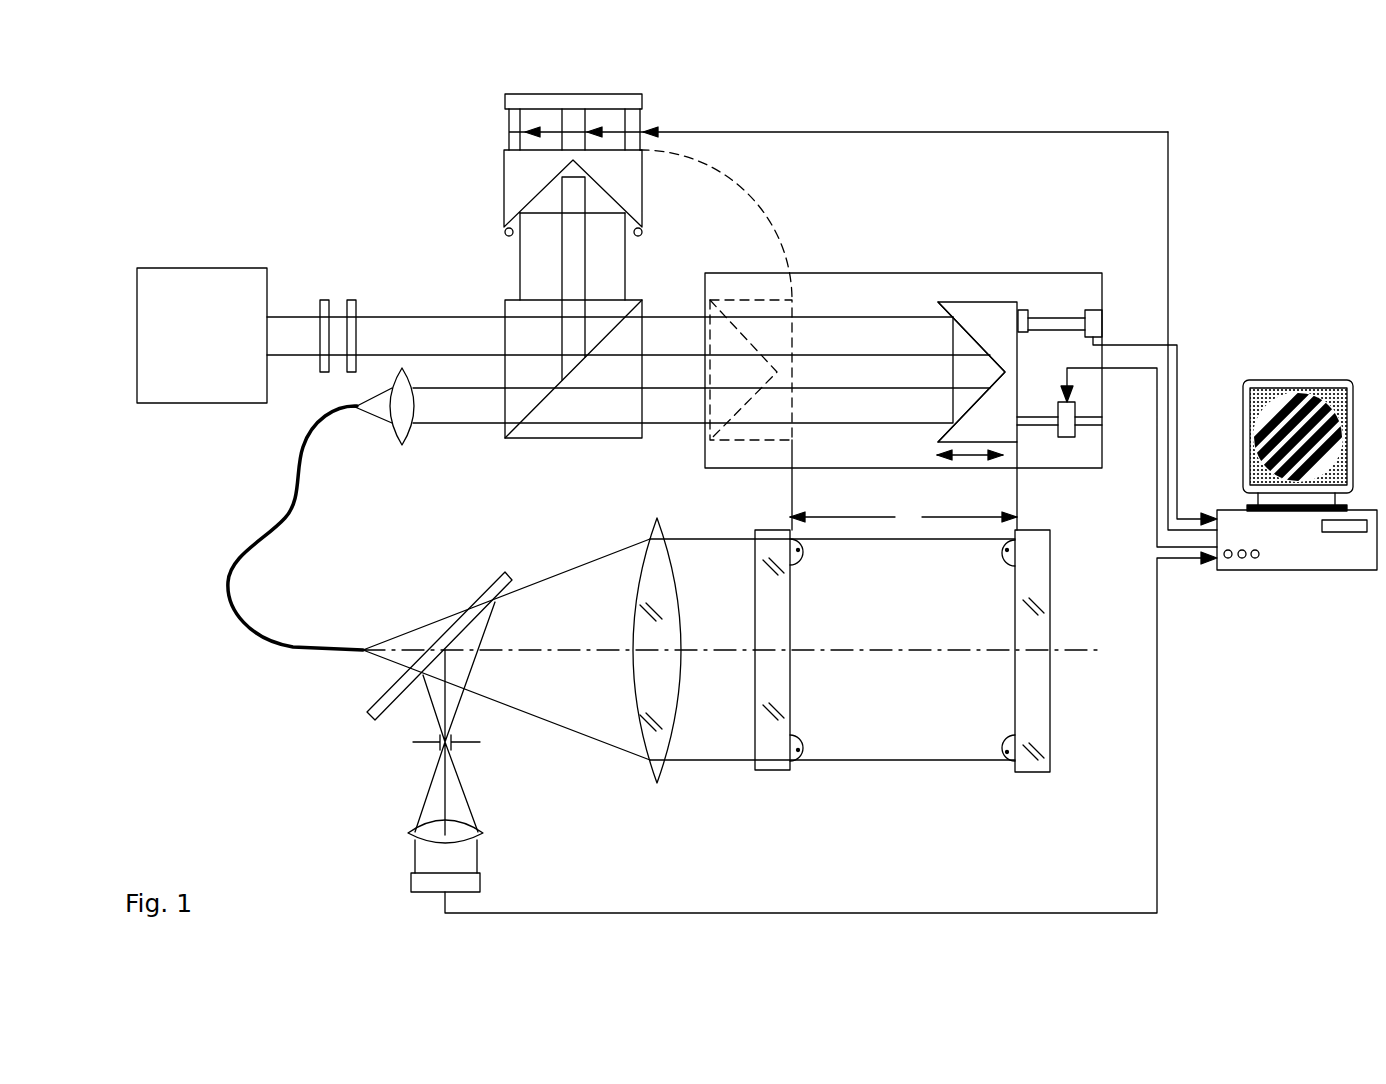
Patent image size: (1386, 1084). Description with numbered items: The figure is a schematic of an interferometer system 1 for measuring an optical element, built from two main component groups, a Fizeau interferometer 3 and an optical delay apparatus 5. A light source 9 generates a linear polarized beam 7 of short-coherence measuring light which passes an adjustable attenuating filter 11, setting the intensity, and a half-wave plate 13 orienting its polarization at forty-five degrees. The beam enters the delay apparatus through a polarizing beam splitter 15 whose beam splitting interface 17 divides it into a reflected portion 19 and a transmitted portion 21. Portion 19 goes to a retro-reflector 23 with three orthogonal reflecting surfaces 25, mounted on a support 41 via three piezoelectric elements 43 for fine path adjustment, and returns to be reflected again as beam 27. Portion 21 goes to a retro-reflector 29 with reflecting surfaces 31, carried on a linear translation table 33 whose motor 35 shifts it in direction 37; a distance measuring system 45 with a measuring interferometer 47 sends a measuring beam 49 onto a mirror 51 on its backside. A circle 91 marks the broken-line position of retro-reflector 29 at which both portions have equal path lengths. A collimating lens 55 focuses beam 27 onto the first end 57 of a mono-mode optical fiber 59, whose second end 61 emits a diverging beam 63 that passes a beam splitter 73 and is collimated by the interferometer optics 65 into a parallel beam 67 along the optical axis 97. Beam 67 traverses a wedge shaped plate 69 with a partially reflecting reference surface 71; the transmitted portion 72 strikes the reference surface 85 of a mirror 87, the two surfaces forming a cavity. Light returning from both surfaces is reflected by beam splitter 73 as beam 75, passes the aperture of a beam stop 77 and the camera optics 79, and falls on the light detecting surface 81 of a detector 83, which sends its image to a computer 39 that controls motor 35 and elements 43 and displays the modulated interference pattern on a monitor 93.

The interferometer system 1 is at (1252, 185).
The Fizeau interferometer 3 is at (260, 775).
The optical delay apparatus 5 is at (285, 142).
The linear polarized beam 7 is at (287, 317).
The light source 9 is at (200, 268).
The adjustable attenuating filter 11 is at (322, 300).
The half-wave plate 13 is at (351, 300).
The polarizing beam splitter 15 is at (581, 438).
The beam splitting interface 17 is at (510, 438).
The reflected beam portion 19 is at (626, 270).
The transmitted beam portion 21 is at (828, 318).
The retro-reflector 23 is at (504, 188).
The reflecting surfaces 25 is at (505, 232).
The beam 27 is at (464, 428).
The retro-reflector 29 is at (749, 298).
The reflecting surfaces 31 is at (938, 303).
The linear translation table 33 is at (952, 273).
The motor 35 is at (1066, 437).
The direction 37 is at (968, 460).
The computer 39 is at (1297, 572).
The support 41 is at (642, 100).
The piezoelectric elements 43 is at (590, 118).
The distance measuring system 45 is at (1140, 285).
The measuring interferometer 47 is at (1093, 310).
The measuring beam 49 is at (1055, 318).
The mirror 51 is at (1022, 310).
The collimating lens 55 is at (402, 447).
The first end 57 is at (356, 410).
The mono-mode optical fiber 59 is at (255, 528).
The second end 61 is at (363, 648).
The diverging beam 63 is at (424, 625).
The interferometer optics 65 is at (650, 768).
The parallel beam 67 is at (687, 537).
The wedge shaped plate 69 is at (771, 772).
The reference surface 71 is at (792, 708).
The beam portion 72 is at (845, 762).
The beam splitter 73 is at (490, 583).
The reflected beam 75 is at (458, 710).
The beam stop 77 is at (465, 745).
The camera optics 79 is at (483, 833).
The light detecting surface 81 is at (418, 866).
The detector 83 is at (480, 885).
The reference surface 85 is at (1013, 707).
The mirror 87 is at (1030, 772).
The circle 91 is at (730, 197).
The monitor 93 is at (1298, 380).
The optical axis 97 is at (1075, 650).